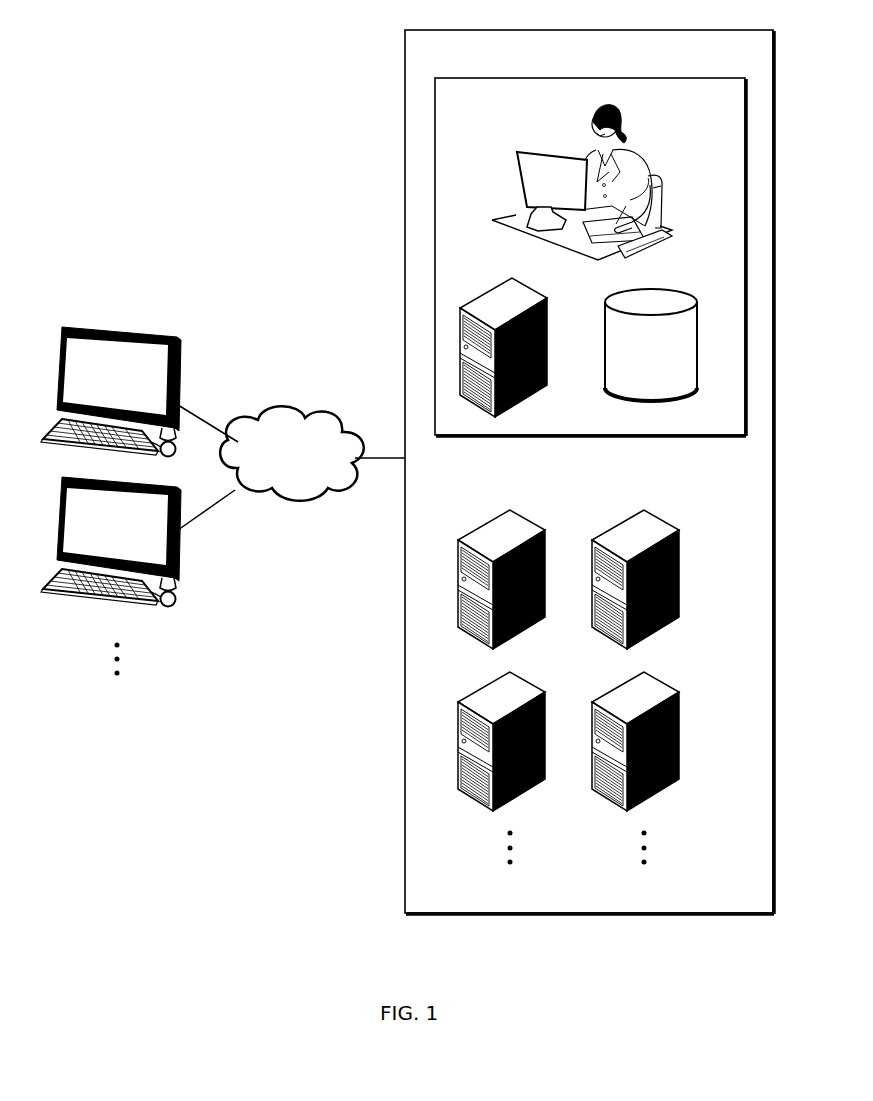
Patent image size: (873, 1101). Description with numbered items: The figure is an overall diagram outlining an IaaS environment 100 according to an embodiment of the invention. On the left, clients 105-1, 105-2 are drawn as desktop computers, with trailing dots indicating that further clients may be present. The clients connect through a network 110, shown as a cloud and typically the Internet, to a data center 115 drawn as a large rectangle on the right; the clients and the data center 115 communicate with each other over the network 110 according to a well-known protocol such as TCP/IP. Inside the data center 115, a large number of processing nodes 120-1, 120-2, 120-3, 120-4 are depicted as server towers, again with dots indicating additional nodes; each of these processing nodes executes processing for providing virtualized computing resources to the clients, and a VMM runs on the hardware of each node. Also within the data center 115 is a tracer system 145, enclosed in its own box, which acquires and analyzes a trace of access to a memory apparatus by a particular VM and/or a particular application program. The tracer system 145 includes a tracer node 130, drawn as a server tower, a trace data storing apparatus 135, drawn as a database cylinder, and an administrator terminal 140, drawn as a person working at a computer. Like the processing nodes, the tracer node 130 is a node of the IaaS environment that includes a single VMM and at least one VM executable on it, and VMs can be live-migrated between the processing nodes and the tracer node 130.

The IaaS environment 100 is at (231, 856).
The client 105-1 is at (179, 363).
The client 105-2 is at (179, 556).
The network 110 is at (306, 469).
The data center 115 is at (672, 31).
The processing node 120-1 is at (543, 530).
The processing node 120-2 is at (677, 530).
The processing node 120-3 is at (543, 692).
The processing node 120-4 is at (677, 692).
The tracer node 130 is at (545, 297).
The trace data storing apparatus 135 is at (681, 279).
The administrator terminal 140 is at (588, 153).
The tracer system 145 is at (637, 79).